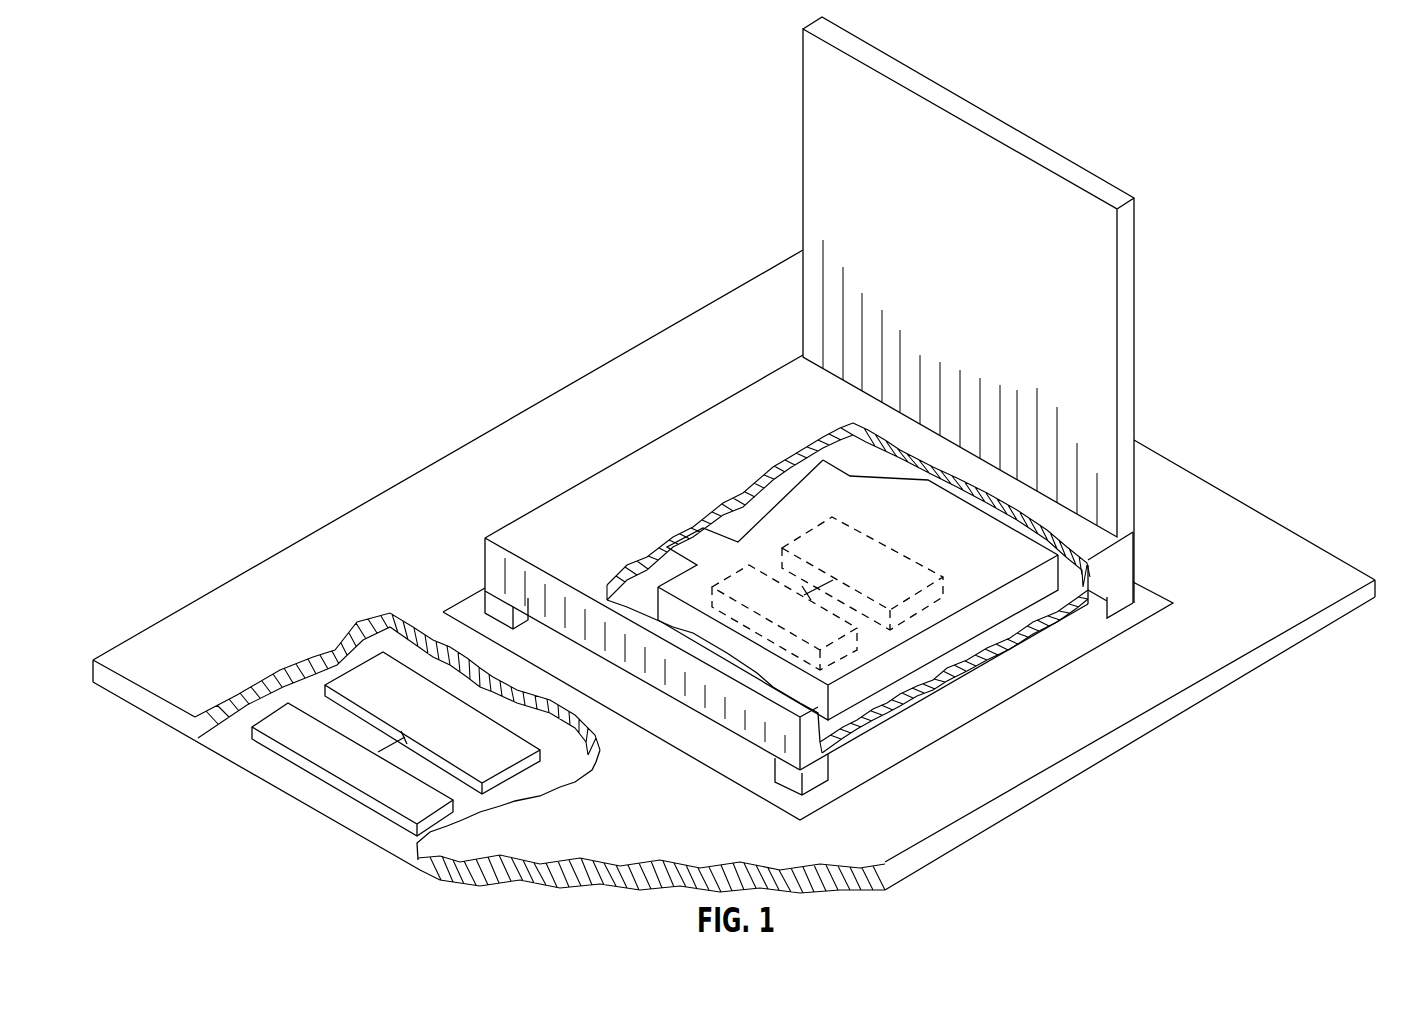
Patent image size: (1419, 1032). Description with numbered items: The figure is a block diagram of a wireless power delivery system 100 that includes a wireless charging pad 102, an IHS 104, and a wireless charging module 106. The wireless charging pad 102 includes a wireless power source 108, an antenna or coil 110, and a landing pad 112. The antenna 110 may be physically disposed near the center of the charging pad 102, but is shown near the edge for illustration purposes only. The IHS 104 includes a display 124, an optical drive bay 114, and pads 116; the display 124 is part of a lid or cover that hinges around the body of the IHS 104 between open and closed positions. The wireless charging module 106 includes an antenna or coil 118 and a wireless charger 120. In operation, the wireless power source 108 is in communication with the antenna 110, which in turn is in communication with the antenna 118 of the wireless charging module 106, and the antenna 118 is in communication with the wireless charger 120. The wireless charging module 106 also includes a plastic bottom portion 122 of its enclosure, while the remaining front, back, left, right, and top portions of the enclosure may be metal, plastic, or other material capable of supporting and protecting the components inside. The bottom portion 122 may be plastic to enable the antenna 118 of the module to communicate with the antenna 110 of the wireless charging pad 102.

The wireless power delivery system 100 is at (289, 178).
The wireless charging pad 102 is at (356, 497).
The IHS 104 is at (481, 563).
The wireless charging module 106 is at (870, 474).
The wireless power source 108 is at (353, 660).
The antenna or coil 110 is at (272, 713).
The landing pad 112 is at (1148, 552).
The optical drive bay 114 is at (863, 697).
The pads 116 is at (815, 790).
The antenna or coil 118 is at (728, 540).
The wireless charger 120 is at (792, 462).
The plastic bottom portion 122 is at (1112, 592).
The display 124 is at (820, 133).